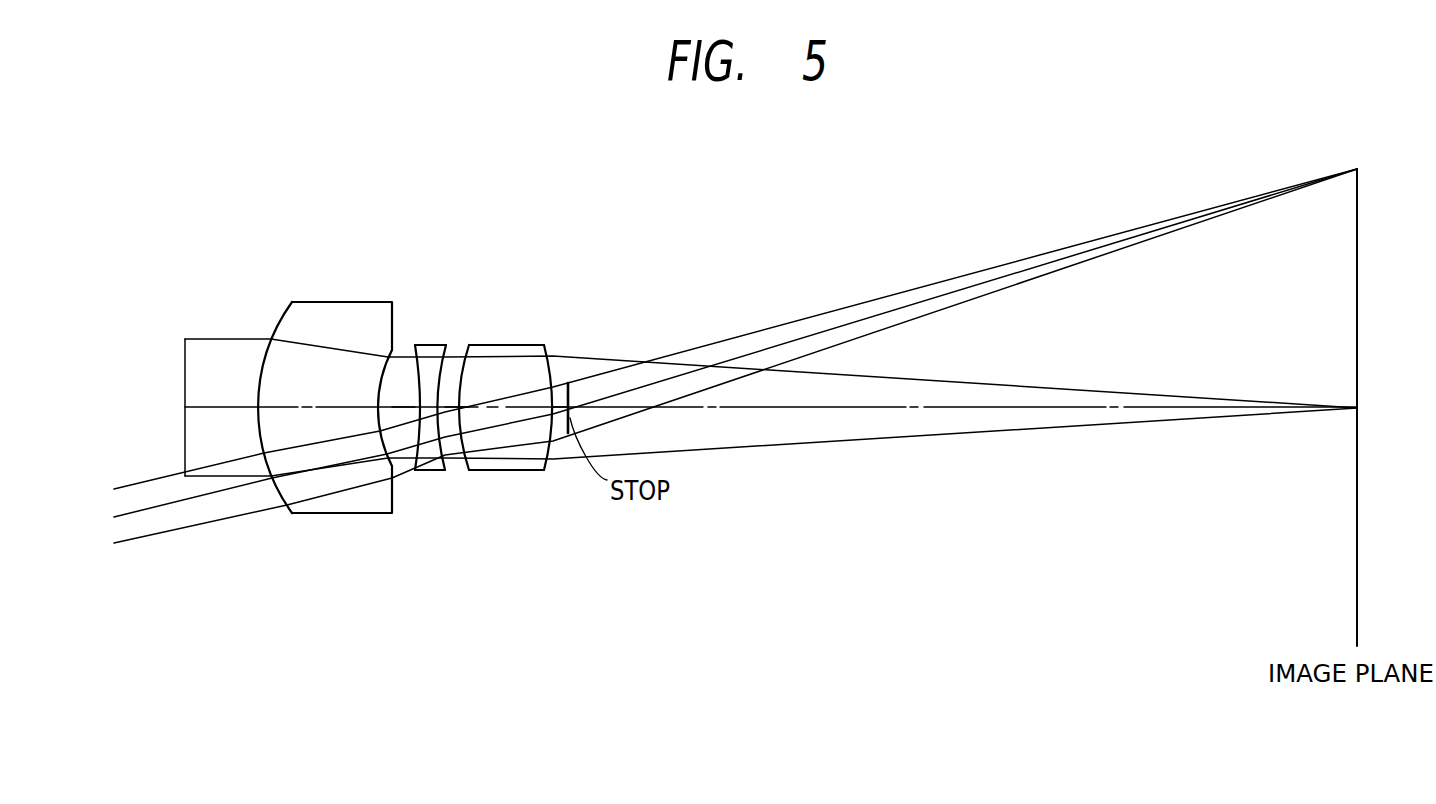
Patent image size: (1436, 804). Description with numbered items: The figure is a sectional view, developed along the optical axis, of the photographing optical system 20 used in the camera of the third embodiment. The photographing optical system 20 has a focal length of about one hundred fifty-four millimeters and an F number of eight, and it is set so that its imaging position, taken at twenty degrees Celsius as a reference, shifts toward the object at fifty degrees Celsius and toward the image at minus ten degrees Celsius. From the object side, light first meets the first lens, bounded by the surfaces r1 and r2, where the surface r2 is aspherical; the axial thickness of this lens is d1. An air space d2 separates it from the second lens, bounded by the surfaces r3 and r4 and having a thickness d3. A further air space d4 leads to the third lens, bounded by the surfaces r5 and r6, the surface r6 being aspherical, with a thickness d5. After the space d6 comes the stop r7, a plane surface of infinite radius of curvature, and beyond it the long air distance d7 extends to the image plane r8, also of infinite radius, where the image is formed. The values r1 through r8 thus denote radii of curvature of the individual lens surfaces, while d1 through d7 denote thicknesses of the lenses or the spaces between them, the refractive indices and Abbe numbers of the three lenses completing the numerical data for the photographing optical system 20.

The radius of curvature of the first lens surface r1 is at (277, 325).
The radius of curvature of the second lens surface r2 is at (378, 370).
The radius of curvature of the third lens surface r3 is at (418, 360).
The radius of curvature of the fourth lens surface r4 is at (441, 372).
The radius of curvature of the fifth lens surface r5 is at (464, 372).
The radius of curvature of the sixth lens surface r6 is at (548, 350).
The stop r7 is at (570, 388).
The image plane r8 is at (1357, 240).
The thickness of the first lens d1 is at (325, 410).
The space between the first and second lenses d2 is at (403, 410).
The thickness of the second lens d3 is at (430, 412).
The space between the second and third lenses d4 is at (452, 410).
The thickness of the third lens d5 is at (510, 410).
The space between the third lens and the stop d6 is at (560, 410).
The space between the stop and the image plane d7 is at (915, 407).
The photographing optical system 20 is at (575, 602).